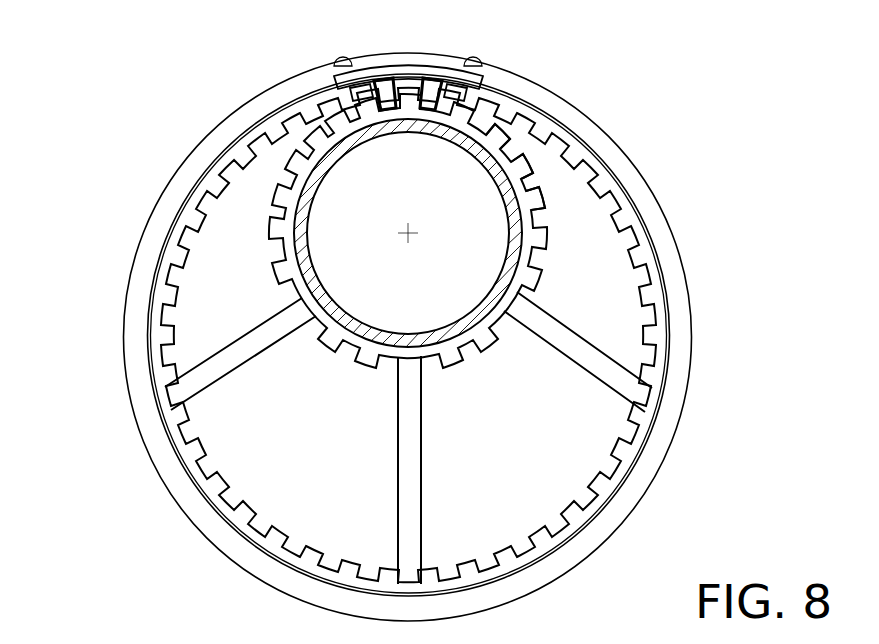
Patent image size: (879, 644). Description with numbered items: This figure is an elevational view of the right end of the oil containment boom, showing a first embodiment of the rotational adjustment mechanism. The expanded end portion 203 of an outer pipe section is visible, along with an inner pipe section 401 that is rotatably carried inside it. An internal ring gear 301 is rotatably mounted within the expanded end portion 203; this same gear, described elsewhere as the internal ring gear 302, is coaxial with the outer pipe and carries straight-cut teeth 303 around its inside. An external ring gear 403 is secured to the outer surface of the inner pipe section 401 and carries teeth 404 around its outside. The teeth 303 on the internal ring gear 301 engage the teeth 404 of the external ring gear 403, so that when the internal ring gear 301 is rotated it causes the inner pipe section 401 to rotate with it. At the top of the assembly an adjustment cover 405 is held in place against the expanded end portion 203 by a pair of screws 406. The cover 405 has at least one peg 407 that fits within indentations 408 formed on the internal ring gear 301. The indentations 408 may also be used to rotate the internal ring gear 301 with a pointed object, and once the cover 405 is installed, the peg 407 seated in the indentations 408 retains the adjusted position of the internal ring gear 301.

The expanded end portion 203 is at (193, 176).
The internal ring gear 301 is at (410, 497).
The internal ring gear 302 is at (638, 238).
The teeth 303 is at (652, 340).
The inner pipe section 401 is at (333, 158).
The external ring gear 403 is at (513, 172).
The teeth 404 is at (535, 262).
The adjustment cover 405 is at (393, 76).
The screws 406 is at (472, 58).
The peg 407 is at (470, 80).
The indentations 408 is at (330, 92).